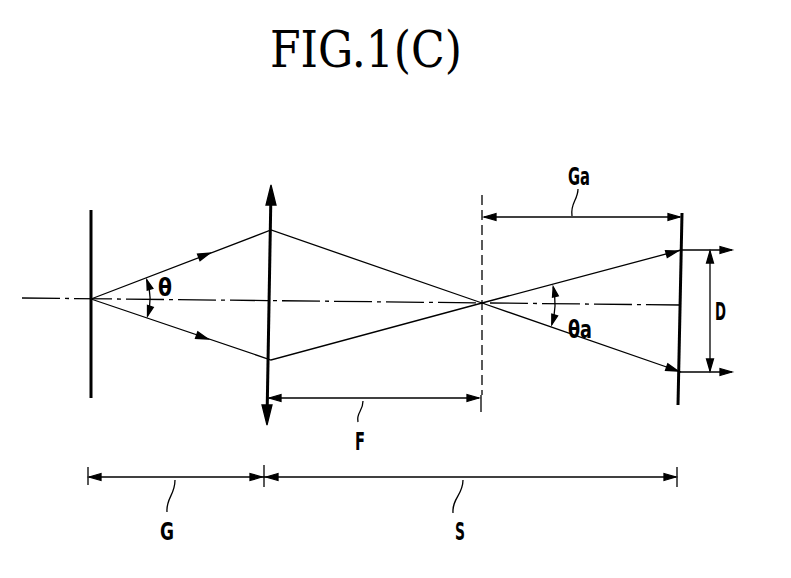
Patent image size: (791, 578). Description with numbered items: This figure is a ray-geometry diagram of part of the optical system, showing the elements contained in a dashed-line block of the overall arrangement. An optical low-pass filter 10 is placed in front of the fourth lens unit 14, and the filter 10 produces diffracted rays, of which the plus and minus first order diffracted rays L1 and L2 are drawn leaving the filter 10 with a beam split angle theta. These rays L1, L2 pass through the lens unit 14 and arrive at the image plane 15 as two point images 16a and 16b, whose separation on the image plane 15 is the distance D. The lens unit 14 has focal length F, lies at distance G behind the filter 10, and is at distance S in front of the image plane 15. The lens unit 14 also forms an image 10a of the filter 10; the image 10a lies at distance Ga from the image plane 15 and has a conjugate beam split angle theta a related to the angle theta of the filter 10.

The optical low-pass filter 10 is at (90, 232).
The fourth lens unit 14 is at (269, 217).
The +1st order diffracted ray L1 is at (180, 262).
The -1st order diffracted ray L2 is at (173, 331).
The image of the optical low-pass filter 10a is at (486, 200).
The image plane 15 is at (687, 233).
The point image 16a is at (694, 374).
The point image 16b is at (700, 247).